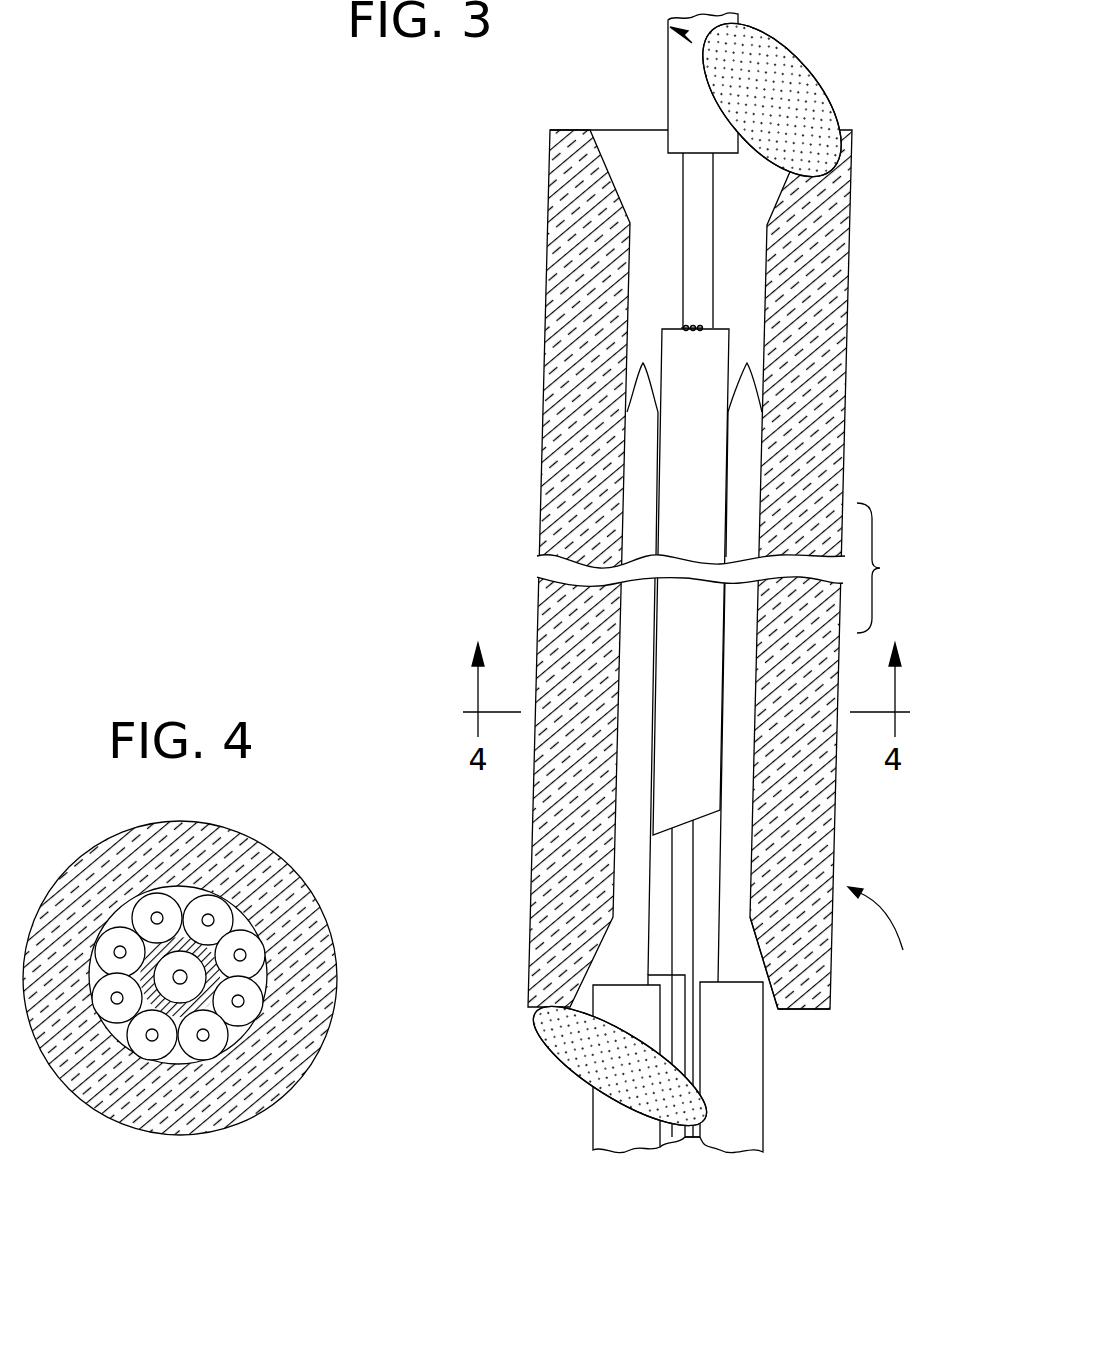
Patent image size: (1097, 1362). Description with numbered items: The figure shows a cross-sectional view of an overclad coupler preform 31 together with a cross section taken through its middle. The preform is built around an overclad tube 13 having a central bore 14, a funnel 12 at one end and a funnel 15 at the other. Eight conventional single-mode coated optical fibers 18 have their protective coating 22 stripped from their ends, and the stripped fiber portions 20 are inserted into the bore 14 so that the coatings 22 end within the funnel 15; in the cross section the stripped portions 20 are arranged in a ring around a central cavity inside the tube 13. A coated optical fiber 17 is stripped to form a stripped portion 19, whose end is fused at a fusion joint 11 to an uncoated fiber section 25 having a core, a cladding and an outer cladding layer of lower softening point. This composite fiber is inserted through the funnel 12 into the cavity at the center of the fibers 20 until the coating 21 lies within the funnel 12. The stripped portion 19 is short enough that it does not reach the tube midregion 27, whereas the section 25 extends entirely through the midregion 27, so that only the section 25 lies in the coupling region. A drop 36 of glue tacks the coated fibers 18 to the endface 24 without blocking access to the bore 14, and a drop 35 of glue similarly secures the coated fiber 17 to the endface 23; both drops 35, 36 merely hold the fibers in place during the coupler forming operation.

In FIG. 3, the fusion joint 11 is at (697, 326).
In FIG. 3, the funnel 12 is at (598, 142).
In FIG. 3, the overclad tube 13 is at (813, 810).
In FIG. 4, the overclad tube 13 is at (297, 903).
In FIG. 3, the bore 14 is at (760, 483).
In FIG. 4, the bore 14 is at (228, 902).
In FIG. 3, the funnel 15 is at (768, 1008).
In FIG. 3, the coated optical fiber 17 is at (668, 27).
In FIG. 3, the coated optical fibers 18 is at (700, 1015).
In FIG. 3, the stripped portion 19 is at (700, 215).
In FIG. 3, the stripped fiber portions 20 is at (633, 633).
In FIG. 4, the stripped fiber portions 20 is at (207, 1058).
In FIG. 3, the coating 21 is at (682, 125).
In FIG. 3, the protective coating 22 is at (723, 1123).
In FIG. 3, the endface 23 is at (567, 130).
In FIG. 3, the endface 24 is at (772, 1010).
In FIG. 3, the uncoated fiber section 25 is at (716, 352).
In FIG. 4, the uncoated fiber section 25 is at (248, 937).
In FIG. 3, the tube midregion 27 is at (880, 568).
In FIG. 3, the overclad coupler preform 31 is at (886, 933).
In FIG. 3, the drop of glue 35 is at (780, 60).
In FIG. 3, the drop of glue 36 is at (558, 1045).